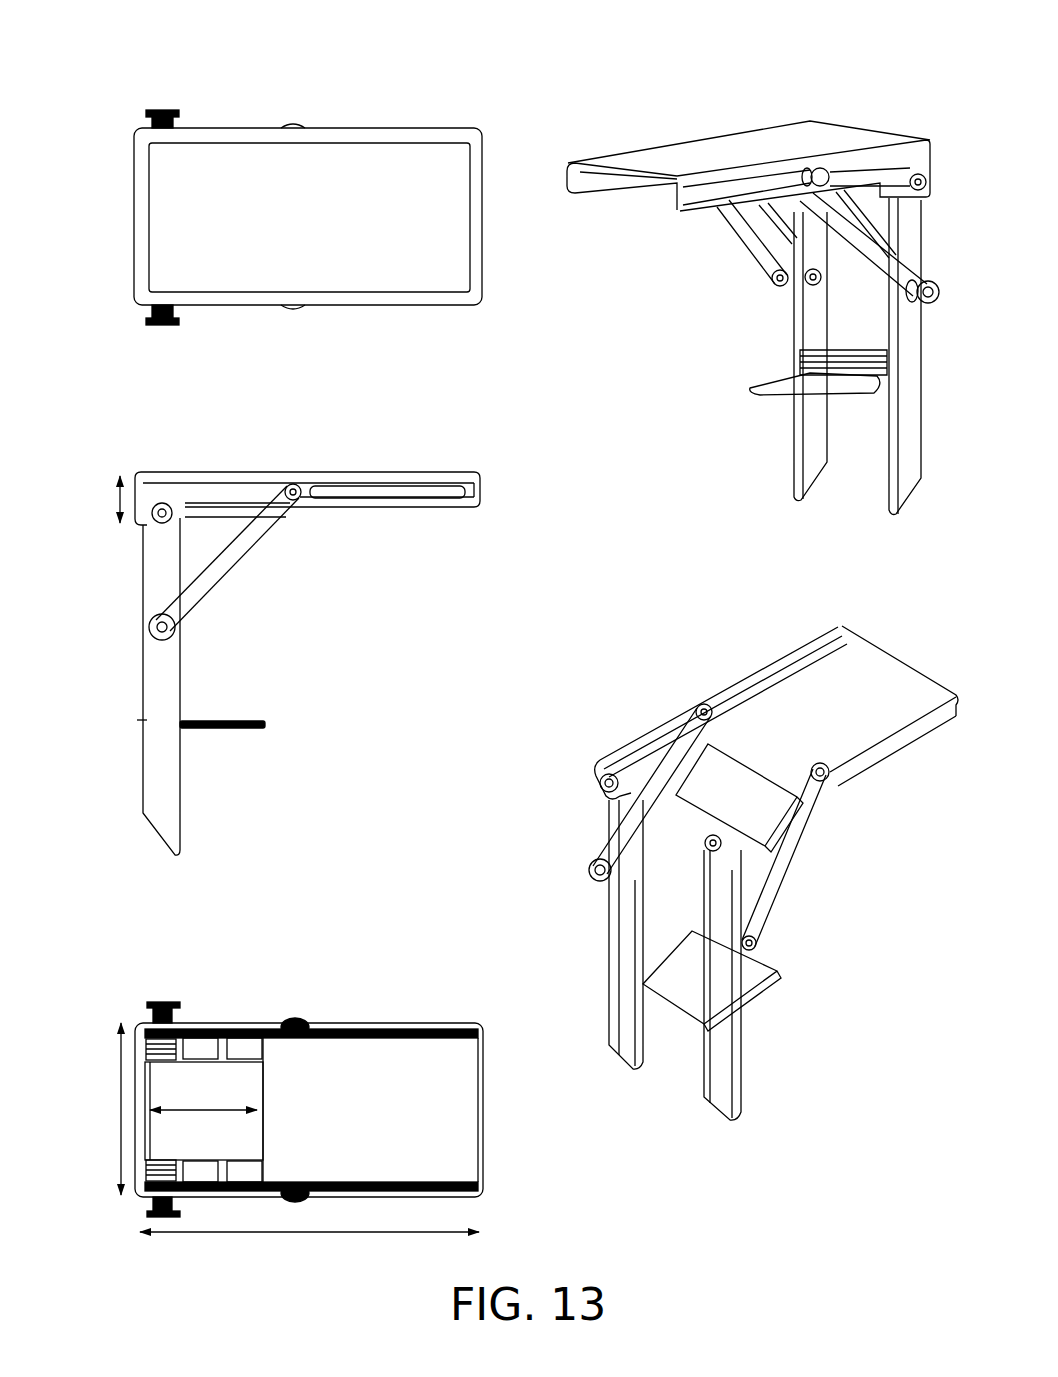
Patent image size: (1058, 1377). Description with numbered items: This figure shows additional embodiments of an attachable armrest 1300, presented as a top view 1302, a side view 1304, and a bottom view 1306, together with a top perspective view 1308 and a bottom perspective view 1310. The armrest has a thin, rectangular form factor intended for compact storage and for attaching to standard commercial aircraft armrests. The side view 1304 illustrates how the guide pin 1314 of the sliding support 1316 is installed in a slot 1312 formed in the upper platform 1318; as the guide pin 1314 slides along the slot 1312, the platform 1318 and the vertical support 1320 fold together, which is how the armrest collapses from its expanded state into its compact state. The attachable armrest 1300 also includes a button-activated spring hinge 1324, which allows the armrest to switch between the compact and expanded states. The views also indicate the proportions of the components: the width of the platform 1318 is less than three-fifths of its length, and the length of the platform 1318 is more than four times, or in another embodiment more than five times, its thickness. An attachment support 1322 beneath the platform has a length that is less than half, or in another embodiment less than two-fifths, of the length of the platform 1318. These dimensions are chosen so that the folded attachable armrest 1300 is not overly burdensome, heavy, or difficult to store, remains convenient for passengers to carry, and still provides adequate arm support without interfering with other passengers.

The attachable armrest 1300 is at (328, 230).
The top view 1302 is at (127, 65).
The side view 1304 is at (127, 457).
The bottom view 1306 is at (127, 989).
The top perspective view 1308 is at (667, 108).
The bottom perspective view 1310 is at (667, 664).
The slot 1312 is at (431, 499).
The guide pin 1314 is at (297, 502).
The sliding support 1316 is at (229, 563).
The upper platform 1318 is at (425, 476).
The vertical support 1320 is at (165, 681).
The attachment support 1322 is at (283, 728).
The button-activated spring hinge 1324 is at (580, 875).